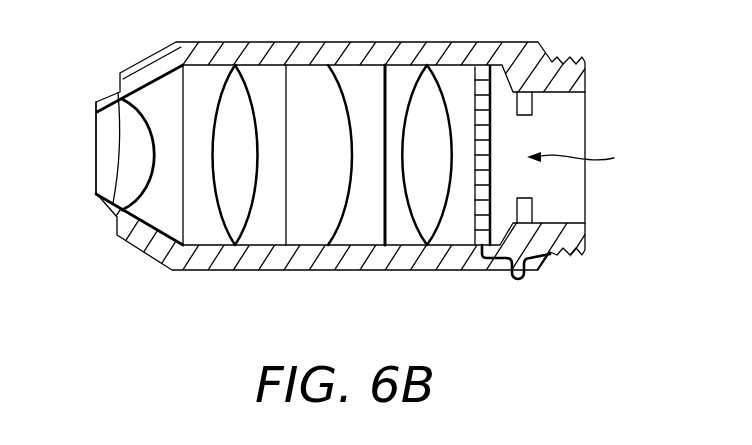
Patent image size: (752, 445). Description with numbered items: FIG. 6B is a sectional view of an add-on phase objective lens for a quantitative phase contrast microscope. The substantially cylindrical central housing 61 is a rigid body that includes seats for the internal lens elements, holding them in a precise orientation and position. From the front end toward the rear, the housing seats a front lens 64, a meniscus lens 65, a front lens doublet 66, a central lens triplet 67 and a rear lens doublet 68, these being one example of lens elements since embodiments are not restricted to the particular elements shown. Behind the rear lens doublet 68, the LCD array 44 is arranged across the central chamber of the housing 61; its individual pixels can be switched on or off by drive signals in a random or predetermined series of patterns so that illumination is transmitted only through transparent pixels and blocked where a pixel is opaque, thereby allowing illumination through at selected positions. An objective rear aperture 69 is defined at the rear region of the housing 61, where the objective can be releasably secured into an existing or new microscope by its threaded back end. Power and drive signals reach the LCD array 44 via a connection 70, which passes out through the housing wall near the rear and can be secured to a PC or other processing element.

The central housing 61 is at (345, 42).
The LCD array 44 is at (490, 70).
The front lens 64 is at (103, 152).
The meniscus lens 65 is at (135, 113).
The front lens doublet 66 is at (241, 241).
The central lens triplet 67 is at (310, 238).
The rear lens doublet 68 is at (428, 240).
The objective rear aperture 69 is at (585, 161).
The connection 70 is at (530, 293).